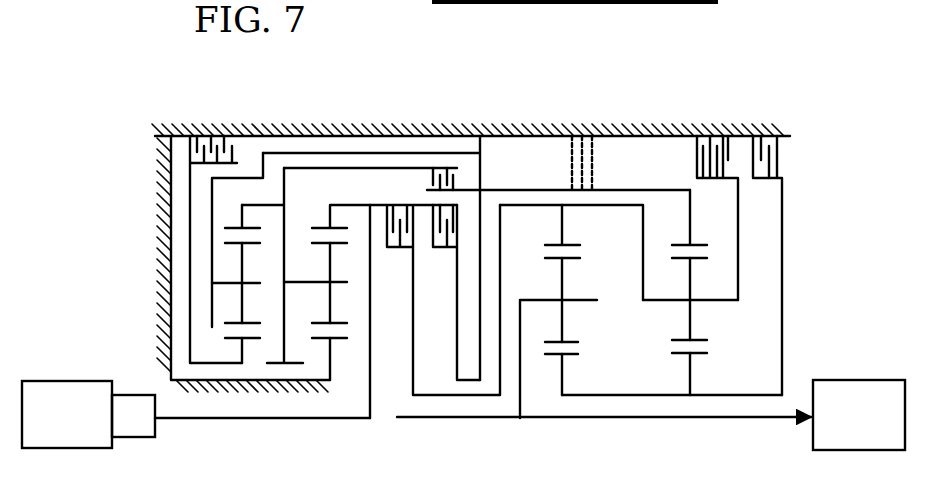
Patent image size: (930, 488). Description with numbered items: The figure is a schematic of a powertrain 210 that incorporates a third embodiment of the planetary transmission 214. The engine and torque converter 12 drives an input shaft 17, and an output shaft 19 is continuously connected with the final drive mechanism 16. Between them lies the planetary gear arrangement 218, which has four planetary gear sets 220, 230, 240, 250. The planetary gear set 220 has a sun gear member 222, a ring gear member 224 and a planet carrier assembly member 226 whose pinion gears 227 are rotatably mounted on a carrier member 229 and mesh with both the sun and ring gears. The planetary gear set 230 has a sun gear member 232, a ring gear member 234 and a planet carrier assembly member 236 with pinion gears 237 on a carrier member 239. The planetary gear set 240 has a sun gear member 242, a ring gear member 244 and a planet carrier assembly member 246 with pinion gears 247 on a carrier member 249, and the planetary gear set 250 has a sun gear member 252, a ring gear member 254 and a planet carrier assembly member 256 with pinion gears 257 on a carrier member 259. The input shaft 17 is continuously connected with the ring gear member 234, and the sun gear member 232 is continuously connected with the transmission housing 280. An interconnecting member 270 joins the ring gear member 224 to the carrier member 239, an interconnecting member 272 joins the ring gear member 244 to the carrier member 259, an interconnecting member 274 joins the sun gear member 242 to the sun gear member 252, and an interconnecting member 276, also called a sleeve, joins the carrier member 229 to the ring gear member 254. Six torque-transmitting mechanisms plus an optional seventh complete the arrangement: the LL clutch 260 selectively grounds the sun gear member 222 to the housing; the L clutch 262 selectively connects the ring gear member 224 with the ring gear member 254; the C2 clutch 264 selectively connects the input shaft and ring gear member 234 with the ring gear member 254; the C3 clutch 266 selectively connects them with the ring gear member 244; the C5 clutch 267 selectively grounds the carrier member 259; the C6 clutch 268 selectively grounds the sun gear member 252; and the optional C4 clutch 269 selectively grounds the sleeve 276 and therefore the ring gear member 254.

The engine and torque converter 12 is at (72, 373).
The final drive mechanism 16 is at (842, 366).
The input shaft 17 is at (176, 418).
The output shaft 19 is at (760, 420).
The powertrain 210 is at (182, 106).
The planetary transmission 214 is at (382, 106).
The planetary gear arrangement 218 is at (512, 106).
The planetary gear set 220 is at (229, 345).
The sun gear member 222 is at (247, 340).
The ring gear member 224 is at (243, 227).
The planet carrier assembly member 226 is at (225, 304).
The pinion gears 227 is at (242, 265).
The carrier member 229 is at (260, 283).
The planetary gear set 230 is at (317, 345).
The sun gear member 232 is at (340, 342).
The ring gear member 234 is at (328, 227).
The planet carrier assembly member 236 is at (339, 298).
The pinion gears 237 is at (335, 266).
The carrier member 239 is at (344, 282).
The planetary gear set 240 is at (551, 359).
The sun gear member 242 is at (572, 356).
The ring gear member 244 is at (555, 244).
The planet carrier assembly member 246 is at (575, 320).
The pinion gears 247 is at (563, 280).
The carrier member 249 is at (597, 300).
The planetary gear set 250 is at (680, 359).
The sun gear member 252 is at (700, 356).
The ring gear member 254 is at (683, 244).
The planet carrier assembly member 256 is at (702, 320).
The pinion gears 257 is at (691, 280).
The carrier member 259 is at (718, 300).
The LL clutch 260 is at (246, 153).
The L clutch 262 is at (462, 172).
The C2 clutch 264 is at (430, 240).
The C3 clutch 266 is at (386, 242).
The C5 clutch 267 is at (682, 153).
The C6 clutch 268 is at (794, 155).
The C4 clutch 269 is at (561, 164).
The interconnecting member 270 is at (287, 217).
The interconnecting member 272 is at (612, 206).
The interconnecting member 274 is at (637, 397).
The interconnecting member 276 is at (332, 153).
The transmission housing 280 is at (727, 136).